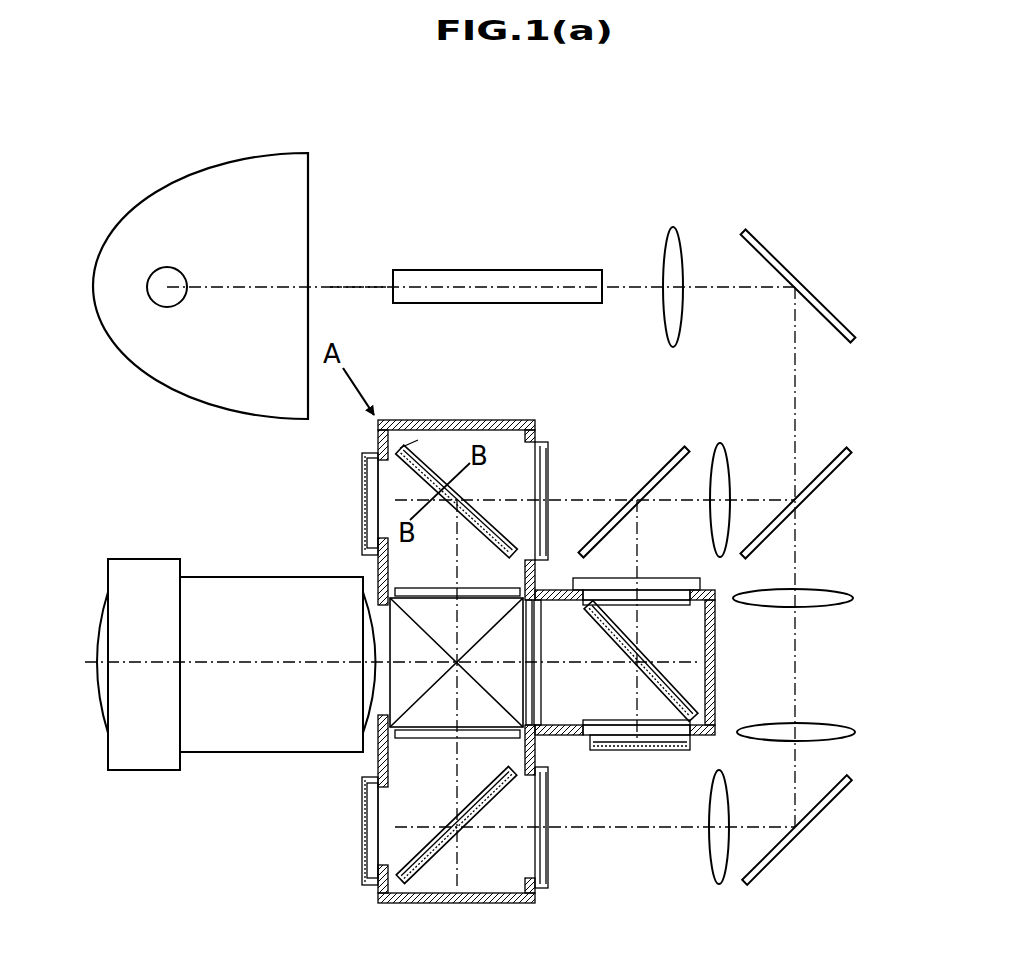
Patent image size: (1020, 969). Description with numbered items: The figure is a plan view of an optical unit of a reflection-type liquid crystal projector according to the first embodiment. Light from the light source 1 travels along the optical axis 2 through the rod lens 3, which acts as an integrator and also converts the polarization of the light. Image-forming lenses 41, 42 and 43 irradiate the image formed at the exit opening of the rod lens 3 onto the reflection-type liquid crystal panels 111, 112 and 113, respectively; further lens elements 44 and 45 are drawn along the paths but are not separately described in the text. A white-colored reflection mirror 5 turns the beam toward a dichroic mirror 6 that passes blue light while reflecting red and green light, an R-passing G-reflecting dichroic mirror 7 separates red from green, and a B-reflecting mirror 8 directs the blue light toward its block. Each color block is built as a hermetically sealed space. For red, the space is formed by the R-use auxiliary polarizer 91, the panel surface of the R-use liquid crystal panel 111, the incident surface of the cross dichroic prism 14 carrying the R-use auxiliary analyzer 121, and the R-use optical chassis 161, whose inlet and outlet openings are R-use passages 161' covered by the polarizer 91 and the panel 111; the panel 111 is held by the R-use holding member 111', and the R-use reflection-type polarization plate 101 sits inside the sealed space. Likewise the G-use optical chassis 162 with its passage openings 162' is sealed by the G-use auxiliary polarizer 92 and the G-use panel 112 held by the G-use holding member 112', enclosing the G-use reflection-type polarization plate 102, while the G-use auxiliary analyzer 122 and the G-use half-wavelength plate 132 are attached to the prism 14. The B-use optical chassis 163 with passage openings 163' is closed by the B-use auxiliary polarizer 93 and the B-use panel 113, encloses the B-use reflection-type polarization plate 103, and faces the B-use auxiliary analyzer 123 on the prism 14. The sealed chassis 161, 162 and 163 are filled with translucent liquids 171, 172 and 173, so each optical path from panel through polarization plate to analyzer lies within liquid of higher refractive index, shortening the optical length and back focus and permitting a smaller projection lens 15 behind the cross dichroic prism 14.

The light source 1 is at (262, 152).
The optical axis 2 is at (350, 275).
The rod lens 3 is at (470, 270).
The image-forming lens 41 is at (683, 232).
The image-forming lens 42 is at (725, 447).
The image-forming lens 43 is at (822, 590).
The relay lens 44 is at (828, 724).
The relay lens 45 is at (710, 870).
The white-colored reflection mirror 5 is at (774, 243).
The B-passing and R, G-reflecting dichroic mirror 6 is at (824, 460).
The R-passing G-reflecting dichroic mirror 7 is at (650, 456).
The B-reflecting mirror 8 is at (810, 835).
The R-use auxiliary polarizer 91 is at (556, 440).
The G-use auxiliary polarizer 92 is at (655, 578).
The B-use auxiliary polarizer 93 is at (548, 874).
The R-use reflection-type polarization plate 101 is at (403, 428).
The G-use reflection-type polarization plate 102 is at (715, 690).
The B-use reflection-type polarization plate 103 is at (432, 872).
The R-use reflection-type liquid crystal panel 111 is at (317, 503).
The R-use holding member 111' is at (319, 504).
The G-use reflection-type liquid crystal panel 112 is at (640, 776).
The G-use holding member 112' is at (655, 774).
The B-use reflection-type liquid crystal panel 113 is at (365, 828).
The R-use auxiliary analyzer 121 is at (458, 592).
The G-use auxiliary analyzer 122 is at (545, 705).
The B-use auxiliary analyzer 123 is at (410, 740).
The G-use ½ wavelength plate 132 is at (535, 683).
The cross dichroic prism 14 is at (380, 740).
The projection lens 15 is at (230, 745).
The R-use optical chassis 161 is at (537, 463).
The R-use passage 161' is at (463, 395).
The G-use optical chassis 162 is at (687, 759).
The G-use passage opening 162' is at (635, 703).
The B-use optical chassis 163 is at (510, 868).
The B-use passage opening 163' is at (461, 827).
The R-use translucent liquid 171 is at (535, 474).
The G-use translucent liquid 172 is at (715, 660).
The B-use translucent liquid 173 is at (505, 880).